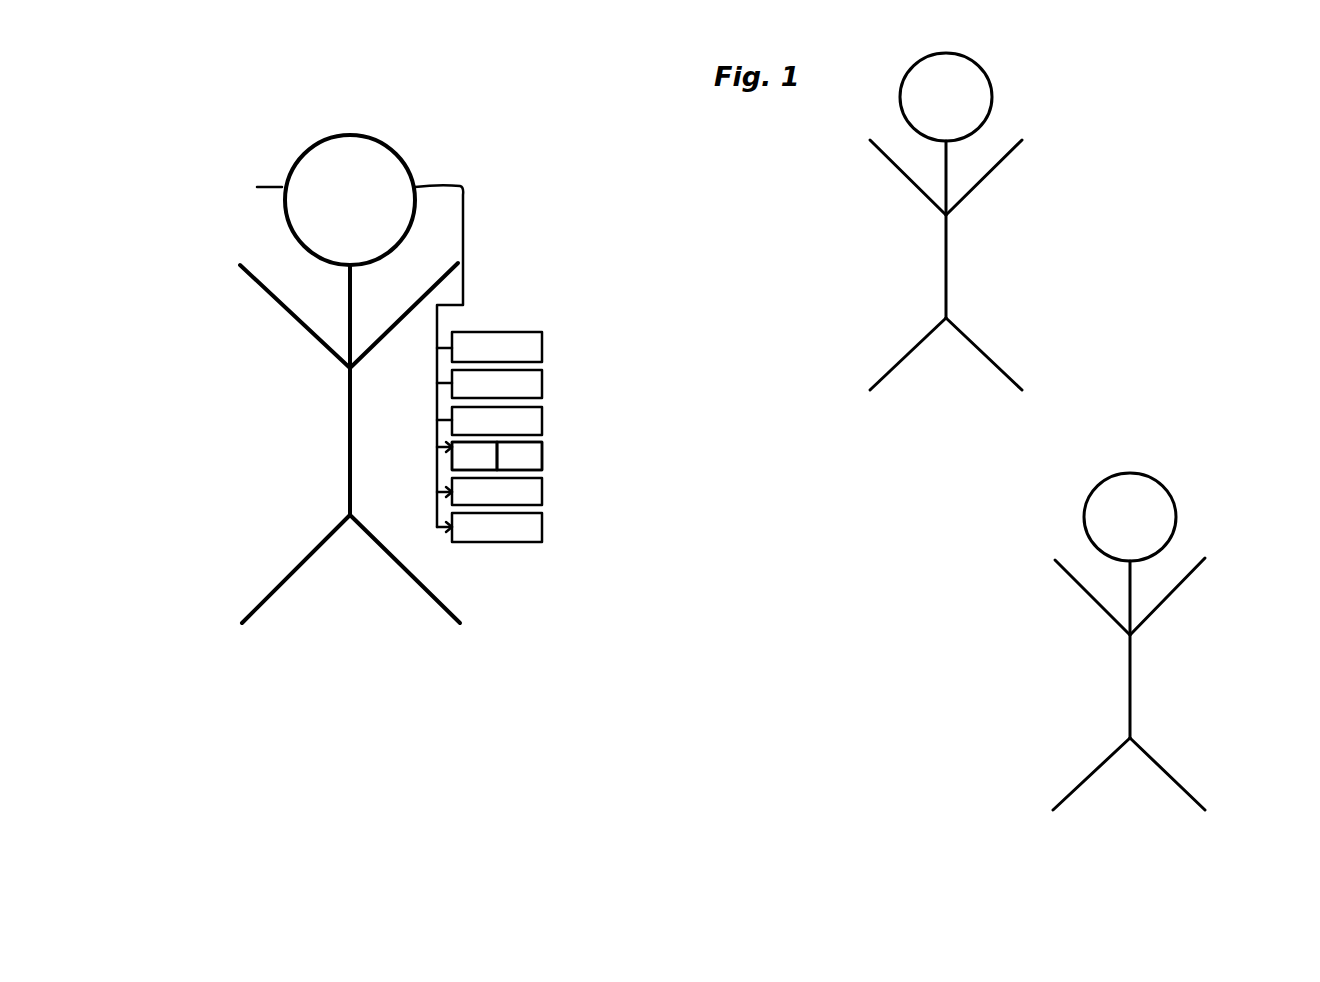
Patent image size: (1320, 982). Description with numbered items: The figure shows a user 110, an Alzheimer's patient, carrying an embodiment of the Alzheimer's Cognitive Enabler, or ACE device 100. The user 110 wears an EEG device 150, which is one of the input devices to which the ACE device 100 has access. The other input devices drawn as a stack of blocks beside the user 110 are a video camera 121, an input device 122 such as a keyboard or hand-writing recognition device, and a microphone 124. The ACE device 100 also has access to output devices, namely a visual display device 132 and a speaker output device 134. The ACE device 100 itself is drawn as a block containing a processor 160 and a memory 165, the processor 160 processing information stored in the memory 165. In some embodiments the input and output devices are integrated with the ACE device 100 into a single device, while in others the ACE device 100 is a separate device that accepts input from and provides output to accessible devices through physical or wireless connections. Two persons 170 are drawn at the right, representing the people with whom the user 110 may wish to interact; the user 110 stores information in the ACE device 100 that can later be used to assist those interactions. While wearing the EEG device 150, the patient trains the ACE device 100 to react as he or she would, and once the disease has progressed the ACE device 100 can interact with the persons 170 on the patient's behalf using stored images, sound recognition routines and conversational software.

The ACE device 100 is at (521, 456).
The user 110 is at (345, 502).
The video camera 121 is at (519, 347).
The input device 122 is at (521, 385).
The microphone 124 is at (522, 421).
The visual display device 132 is at (521, 491).
The speaker output device 134 is at (519, 527).
The EEG device 150 is at (442, 167).
The processor 160 is at (473, 453).
The memory 165 is at (527, 453).
The persons 170 is at (1062, 431).